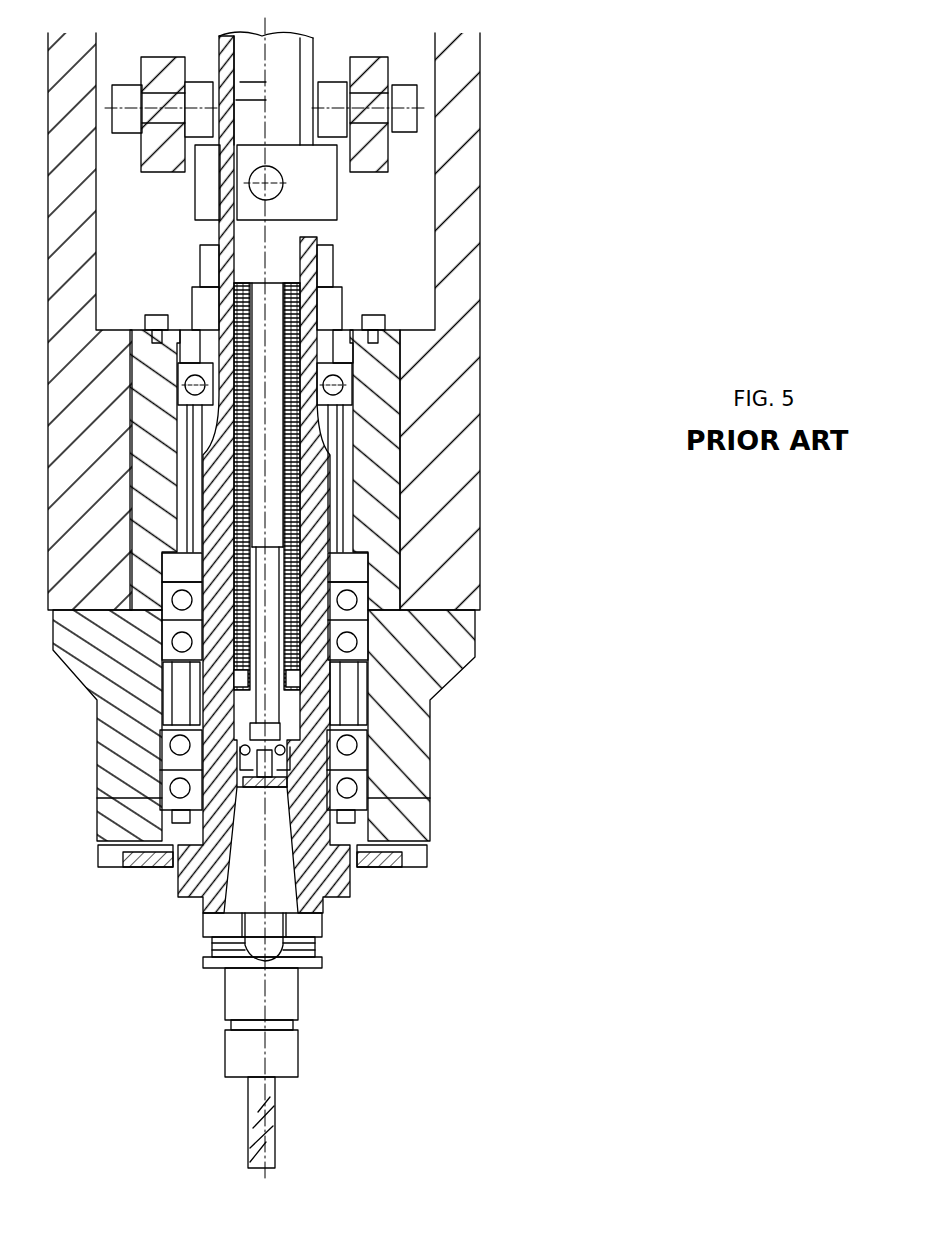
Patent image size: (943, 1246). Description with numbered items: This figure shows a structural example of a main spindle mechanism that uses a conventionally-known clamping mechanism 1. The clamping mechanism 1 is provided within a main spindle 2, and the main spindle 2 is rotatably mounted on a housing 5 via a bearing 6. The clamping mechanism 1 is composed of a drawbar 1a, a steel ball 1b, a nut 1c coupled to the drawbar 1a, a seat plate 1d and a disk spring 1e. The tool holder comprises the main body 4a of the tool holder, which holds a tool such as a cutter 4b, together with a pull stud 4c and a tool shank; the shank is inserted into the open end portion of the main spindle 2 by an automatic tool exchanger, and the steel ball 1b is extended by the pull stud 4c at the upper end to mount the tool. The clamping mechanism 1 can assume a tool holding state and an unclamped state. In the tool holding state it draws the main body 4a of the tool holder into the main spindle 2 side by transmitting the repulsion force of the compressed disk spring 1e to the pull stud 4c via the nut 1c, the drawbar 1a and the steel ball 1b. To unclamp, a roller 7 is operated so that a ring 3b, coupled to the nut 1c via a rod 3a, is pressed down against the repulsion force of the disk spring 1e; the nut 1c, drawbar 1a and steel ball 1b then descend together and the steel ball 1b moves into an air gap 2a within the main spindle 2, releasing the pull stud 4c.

The clamping mechanism 1 is at (537, 367).
The drawbar 1a is at (272, 500).
The steel ball 1b is at (292, 754).
The nut 1c is at (270, 228).
The seat plate 1d is at (300, 694).
The disk spring 1e is at (338, 382).
The main spindle 2 is at (343, 873).
The air gap 2a is at (427, 845).
The rod 3a is at (255, 157).
The ring 3b is at (318, 183).
The main body of tool holder 4a is at (297, 992).
The cutter 4b is at (283, 1147).
The pull stud 4c is at (290, 776).
The housing 5 is at (450, 622).
The bearing 6 is at (358, 640).
The roller 7 is at (343, 48).